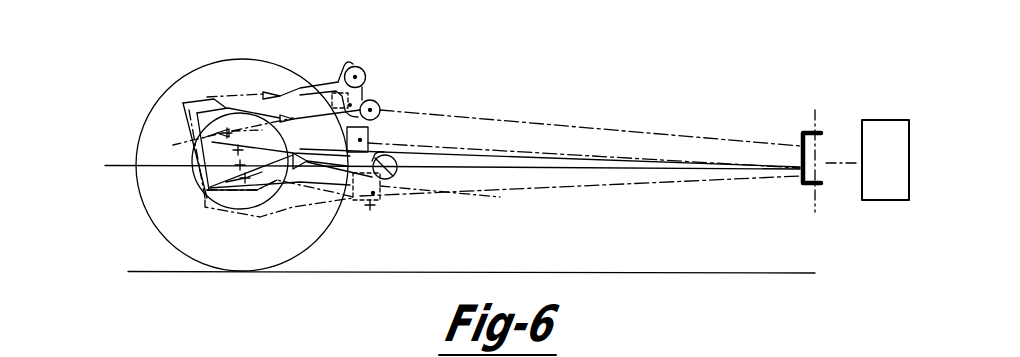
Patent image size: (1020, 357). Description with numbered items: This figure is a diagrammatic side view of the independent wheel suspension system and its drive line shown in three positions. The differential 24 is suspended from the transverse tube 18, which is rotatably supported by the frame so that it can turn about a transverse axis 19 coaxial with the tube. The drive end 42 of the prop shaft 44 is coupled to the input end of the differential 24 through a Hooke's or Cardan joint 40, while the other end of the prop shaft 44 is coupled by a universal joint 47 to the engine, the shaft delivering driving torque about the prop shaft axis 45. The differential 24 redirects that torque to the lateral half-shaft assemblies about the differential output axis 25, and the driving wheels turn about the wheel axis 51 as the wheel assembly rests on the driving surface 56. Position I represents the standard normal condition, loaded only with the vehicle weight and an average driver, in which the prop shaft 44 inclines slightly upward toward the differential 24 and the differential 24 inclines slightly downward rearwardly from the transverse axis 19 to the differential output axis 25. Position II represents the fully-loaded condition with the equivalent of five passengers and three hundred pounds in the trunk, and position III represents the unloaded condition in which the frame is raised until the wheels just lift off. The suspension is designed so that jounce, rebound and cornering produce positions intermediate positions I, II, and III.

The transverse tube 18 is at (357, 75).
The transverse axis 19 is at (368, 68).
The differential 24 is at (207, 100).
The differential output axis 25 is at (203, 138).
The Hooke's or Cardan joint 40 is at (375, 100).
The drive end 42 is at (392, 198).
The prop shaft 44 is at (413, 200).
The prop shaft axis 45 is at (527, 122).
The universal joint 47 is at (803, 133).
The wheel axis 51 is at (203, 188).
The driving surface 56 is at (155, 271).
The position I is at (641, 160).
The position II is at (655, 182).
The position III is at (602, 127).